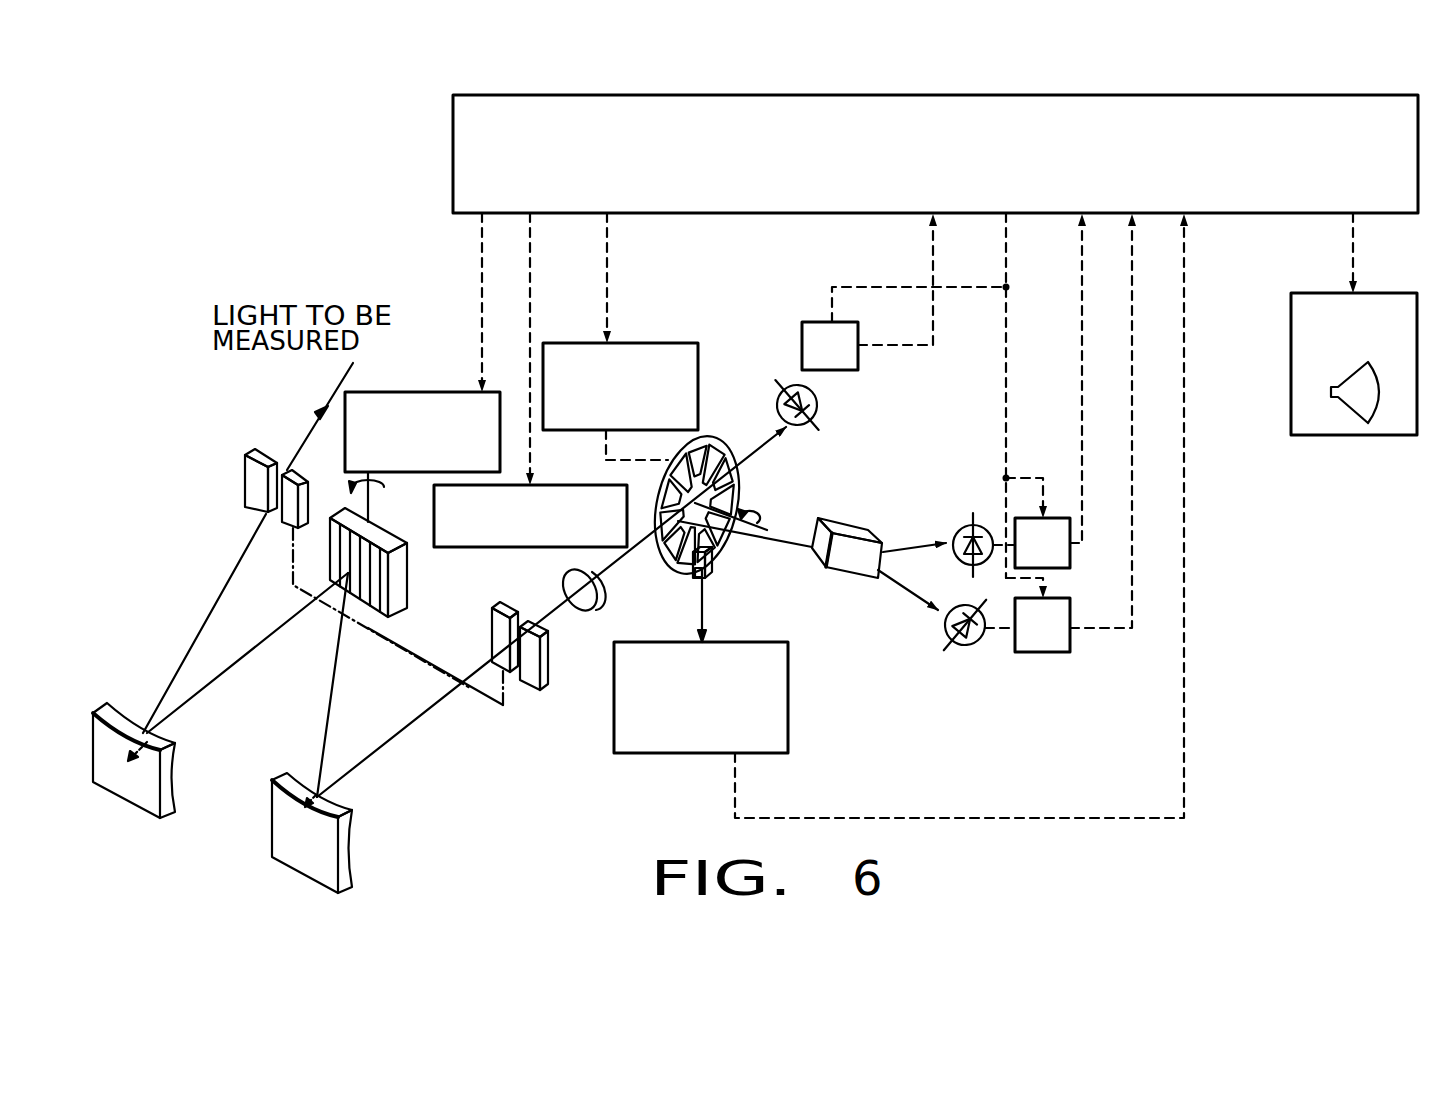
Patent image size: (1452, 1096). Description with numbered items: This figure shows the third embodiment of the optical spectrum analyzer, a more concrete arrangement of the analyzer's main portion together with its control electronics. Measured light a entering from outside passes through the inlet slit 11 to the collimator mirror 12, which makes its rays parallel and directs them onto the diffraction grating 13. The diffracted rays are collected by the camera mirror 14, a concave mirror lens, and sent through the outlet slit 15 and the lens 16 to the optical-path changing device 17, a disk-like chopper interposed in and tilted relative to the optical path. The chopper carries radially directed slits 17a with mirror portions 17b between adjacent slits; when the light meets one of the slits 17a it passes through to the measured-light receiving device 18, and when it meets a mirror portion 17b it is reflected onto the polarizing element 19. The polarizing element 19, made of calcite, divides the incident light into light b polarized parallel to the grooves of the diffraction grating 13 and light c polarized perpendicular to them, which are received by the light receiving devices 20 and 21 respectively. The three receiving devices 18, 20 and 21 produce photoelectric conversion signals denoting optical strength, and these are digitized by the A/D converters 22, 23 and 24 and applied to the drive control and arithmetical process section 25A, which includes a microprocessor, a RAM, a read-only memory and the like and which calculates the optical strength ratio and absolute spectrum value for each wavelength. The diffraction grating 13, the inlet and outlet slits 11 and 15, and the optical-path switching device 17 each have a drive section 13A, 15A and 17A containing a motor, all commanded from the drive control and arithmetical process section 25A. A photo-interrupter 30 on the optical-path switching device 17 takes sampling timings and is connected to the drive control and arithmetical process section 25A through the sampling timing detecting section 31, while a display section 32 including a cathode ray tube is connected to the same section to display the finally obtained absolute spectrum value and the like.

The inlet slit 11 is at (248, 495).
The collimator mirror 12 is at (130, 800).
The diffraction grating 13 is at (410, 600).
The grating drive section 13A is at (461, 392).
The camera mirror 14 is at (287, 858).
The outlet slit 15 is at (552, 675).
The slits drive section 15A is at (453, 548).
The lens 16 is at (578, 600).
The optical-path changing device 17 is at (692, 508).
The chopper drive section 17A is at (687, 343).
The slits 17a is at (678, 555).
The mirror portions 17b is at (686, 562).
The measured-light receiving device 18 is at (807, 425).
The polarizing element 19 is at (842, 563).
The light receiving device 20 is at (970, 648).
The light receiving device 21 is at (955, 530).
The A/D converter 22 is at (860, 360).
The A/D converter 23 is at (1070, 640).
The A/D converter 24 is at (1070, 557).
The drive control and arithmetical process section 25A is at (1248, 214).
The photo-interrupter 30 is at (713, 562).
The sampling timing detecting section 31 is at (788, 716).
The display section 32 is at (1385, 436).
The measured light a is at (325, 404).
The parallel-polarized light b is at (898, 584).
The perpendicularly-polarized light c is at (908, 544).